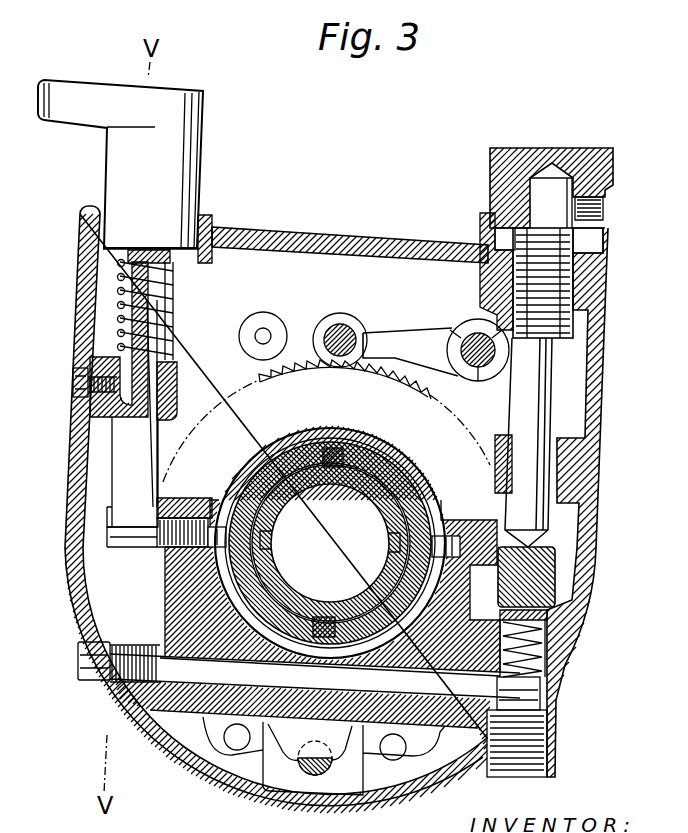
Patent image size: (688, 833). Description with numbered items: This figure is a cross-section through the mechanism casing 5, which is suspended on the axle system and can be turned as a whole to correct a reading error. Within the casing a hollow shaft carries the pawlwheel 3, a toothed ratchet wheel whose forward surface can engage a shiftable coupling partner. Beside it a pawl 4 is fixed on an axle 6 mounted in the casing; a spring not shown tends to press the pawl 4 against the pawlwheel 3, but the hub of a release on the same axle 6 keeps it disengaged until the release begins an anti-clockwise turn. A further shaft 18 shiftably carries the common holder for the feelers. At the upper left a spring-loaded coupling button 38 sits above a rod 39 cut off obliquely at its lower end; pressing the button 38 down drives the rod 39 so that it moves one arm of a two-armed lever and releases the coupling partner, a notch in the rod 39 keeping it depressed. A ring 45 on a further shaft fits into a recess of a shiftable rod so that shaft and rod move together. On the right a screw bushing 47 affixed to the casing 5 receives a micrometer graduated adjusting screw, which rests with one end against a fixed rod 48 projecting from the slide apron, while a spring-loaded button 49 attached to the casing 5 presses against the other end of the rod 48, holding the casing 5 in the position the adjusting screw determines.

The pawlwheel 3 is at (242, 403).
The pawl 4 is at (430, 333).
The casing 5 is at (258, 234).
The axle 6 is at (475, 362).
The shaft 18 is at (338, 328).
The coupling button 38 is at (182, 137).
The rod 39 is at (123, 463).
The ring 45 is at (572, 157).
The screw bushing 47 is at (600, 270).
The fixed rod 48 is at (543, 573).
The spring-loaded button 49 is at (548, 617).